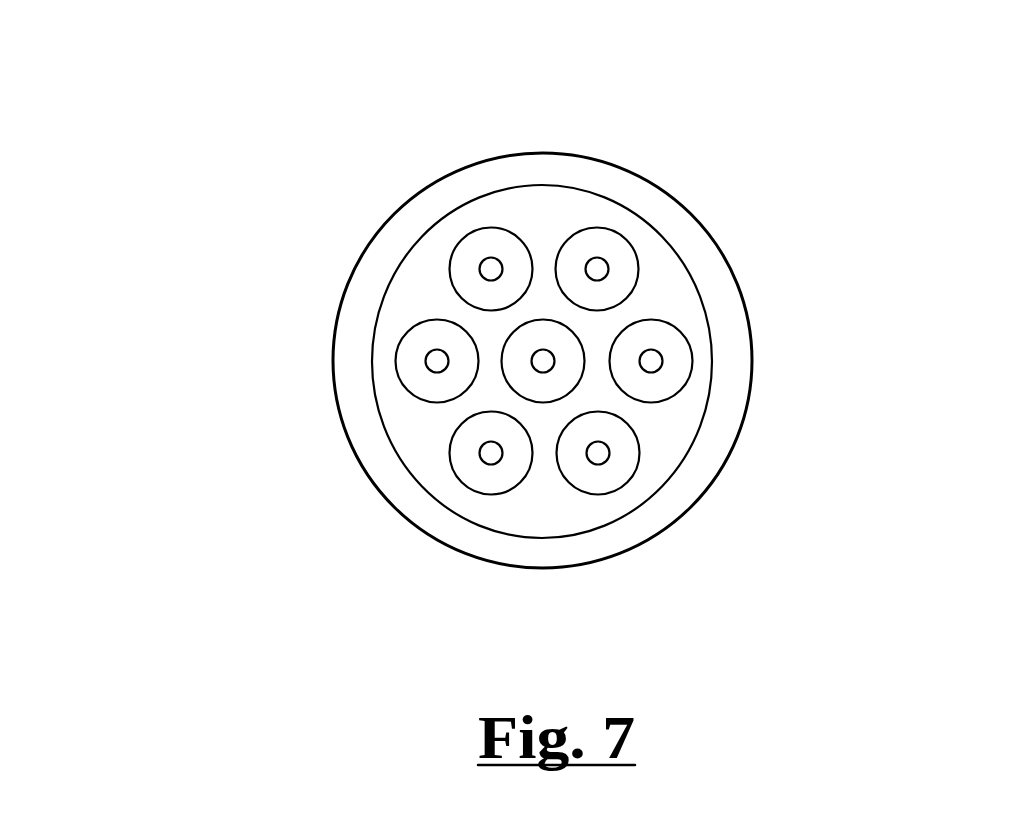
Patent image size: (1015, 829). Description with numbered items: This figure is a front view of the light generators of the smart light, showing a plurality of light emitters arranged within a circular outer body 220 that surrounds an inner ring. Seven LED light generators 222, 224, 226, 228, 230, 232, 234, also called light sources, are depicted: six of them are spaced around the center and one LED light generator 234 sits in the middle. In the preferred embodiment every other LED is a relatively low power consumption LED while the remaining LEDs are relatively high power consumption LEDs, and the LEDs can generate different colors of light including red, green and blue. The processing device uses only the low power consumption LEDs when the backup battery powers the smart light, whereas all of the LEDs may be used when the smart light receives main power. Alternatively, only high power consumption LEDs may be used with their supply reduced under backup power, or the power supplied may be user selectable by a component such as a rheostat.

The cable outer jacket 220 is at (708, 233).
The LED light generator 222 is at (605, 230).
The LED light generator 224 is at (692, 378).
The LED light generator 226 is at (627, 473).
The LED light generator 228 is at (460, 485).
The LED light generator 230 is at (395, 358).
The LED light generator 232 is at (467, 233).
The LED light generator 234 is at (540, 320).